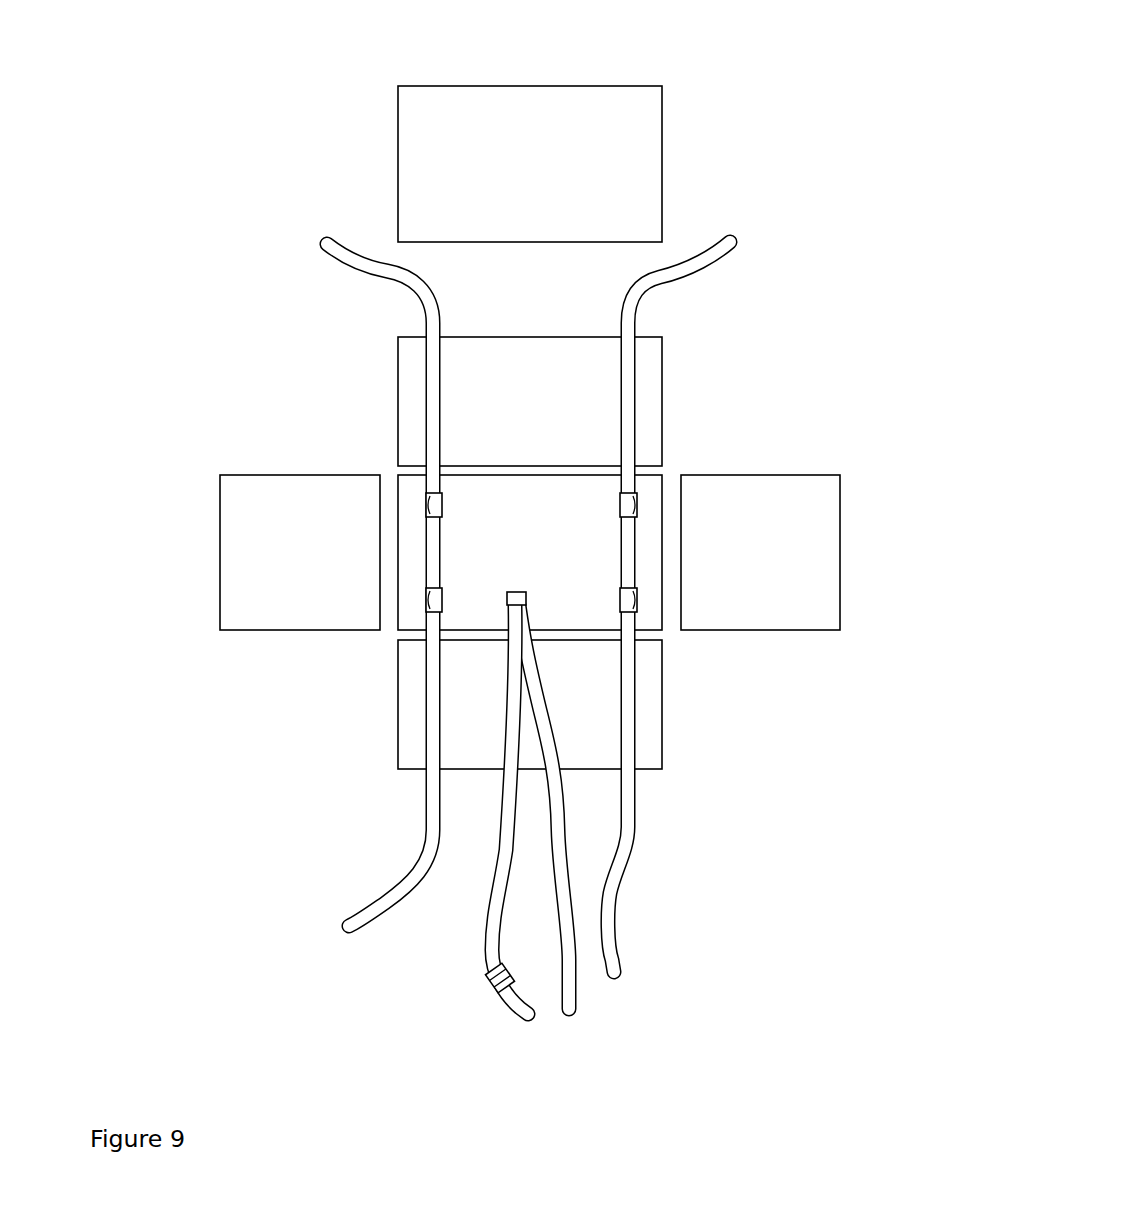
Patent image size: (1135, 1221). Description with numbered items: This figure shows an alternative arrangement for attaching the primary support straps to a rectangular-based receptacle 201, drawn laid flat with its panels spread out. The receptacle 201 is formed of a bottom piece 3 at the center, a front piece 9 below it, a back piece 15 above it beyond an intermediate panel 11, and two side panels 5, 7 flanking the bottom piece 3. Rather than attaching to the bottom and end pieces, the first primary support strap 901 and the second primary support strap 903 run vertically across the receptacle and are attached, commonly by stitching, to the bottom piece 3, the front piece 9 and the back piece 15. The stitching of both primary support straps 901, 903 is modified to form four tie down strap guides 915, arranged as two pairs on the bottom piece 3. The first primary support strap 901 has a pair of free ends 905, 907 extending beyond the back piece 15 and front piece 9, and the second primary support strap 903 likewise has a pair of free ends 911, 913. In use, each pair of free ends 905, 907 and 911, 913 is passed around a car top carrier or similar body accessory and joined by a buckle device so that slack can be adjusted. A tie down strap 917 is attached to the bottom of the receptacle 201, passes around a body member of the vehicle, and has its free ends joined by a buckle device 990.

The receptacle 201 is at (518, 530).
The back piece 15 is at (648, 137).
The upper back panel 11 is at (591, 396).
The bottom piece 3 is at (560, 609).
The front piece 9 is at (584, 713).
The left side panel 5 is at (245, 543).
The right side panel 7 is at (806, 568).
The first primary support strap 901 is at (432, 380).
The second primary support strap 903 is at (632, 422).
The free end 905 is at (318, 230).
The free end 907 is at (345, 928).
The free end 911 is at (743, 230).
The free end 913 is at (622, 973).
The tie down strap guides 915 is at (612, 598).
The tie down strap 917 is at (567, 888).
The buckle device 990 is at (492, 983).